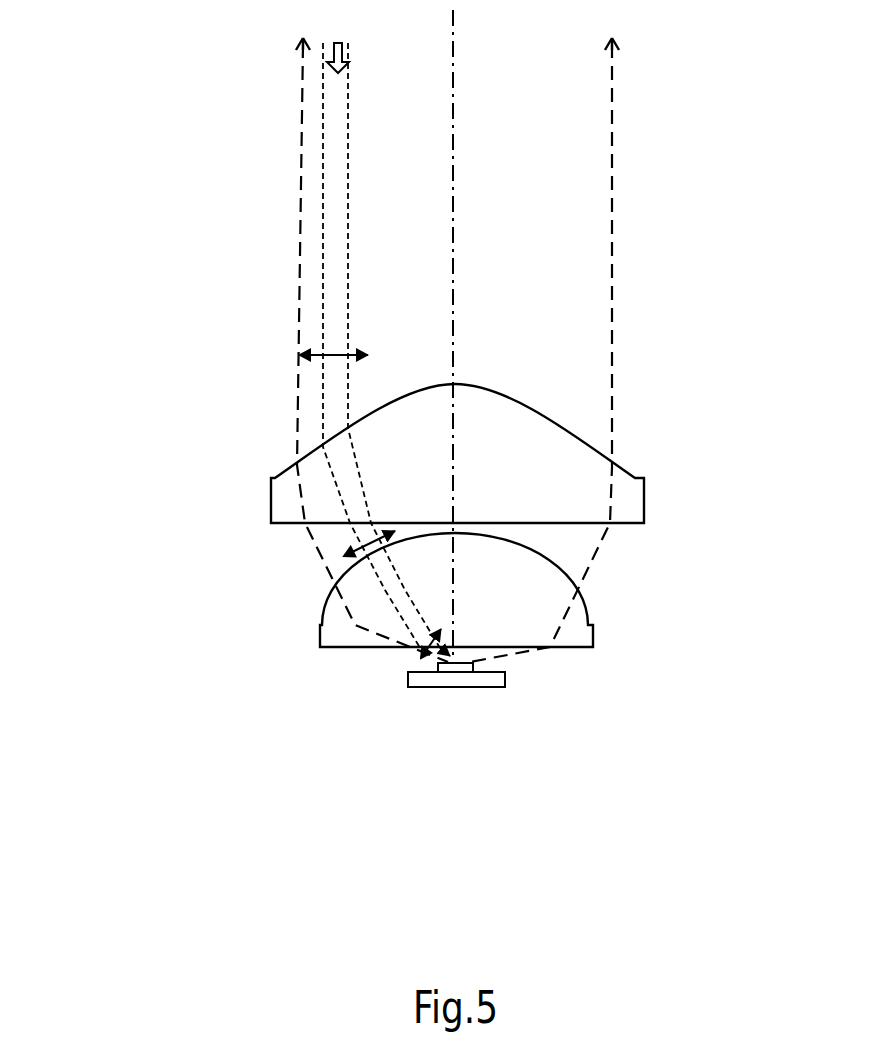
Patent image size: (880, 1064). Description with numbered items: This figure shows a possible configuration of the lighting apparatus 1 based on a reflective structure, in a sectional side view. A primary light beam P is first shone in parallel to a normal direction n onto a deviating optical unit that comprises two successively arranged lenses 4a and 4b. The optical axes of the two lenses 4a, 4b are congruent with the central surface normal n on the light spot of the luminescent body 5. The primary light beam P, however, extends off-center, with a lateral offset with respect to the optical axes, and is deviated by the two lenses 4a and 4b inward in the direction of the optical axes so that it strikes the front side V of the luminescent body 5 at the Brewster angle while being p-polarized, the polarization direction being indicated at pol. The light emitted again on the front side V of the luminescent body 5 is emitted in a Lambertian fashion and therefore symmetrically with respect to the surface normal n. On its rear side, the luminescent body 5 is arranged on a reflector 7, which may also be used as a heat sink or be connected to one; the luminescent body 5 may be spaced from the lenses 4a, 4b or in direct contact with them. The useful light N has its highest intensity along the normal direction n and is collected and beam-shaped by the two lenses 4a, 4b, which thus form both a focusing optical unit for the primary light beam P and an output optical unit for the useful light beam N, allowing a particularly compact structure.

The lighting apparatus 1 is at (138, 126).
The lens 4a is at (644, 500).
The lens 4b is at (593, 634).
The luminescent body 5 is at (462, 672).
The reflector 7 is at (425, 687).
The useful light N is at (612, 203).
The primary light beam P is at (352, 165).
The polarization direction pol is at (348, 350).
The normal direction n is at (455, 193).
The front side V is at (466, 654).